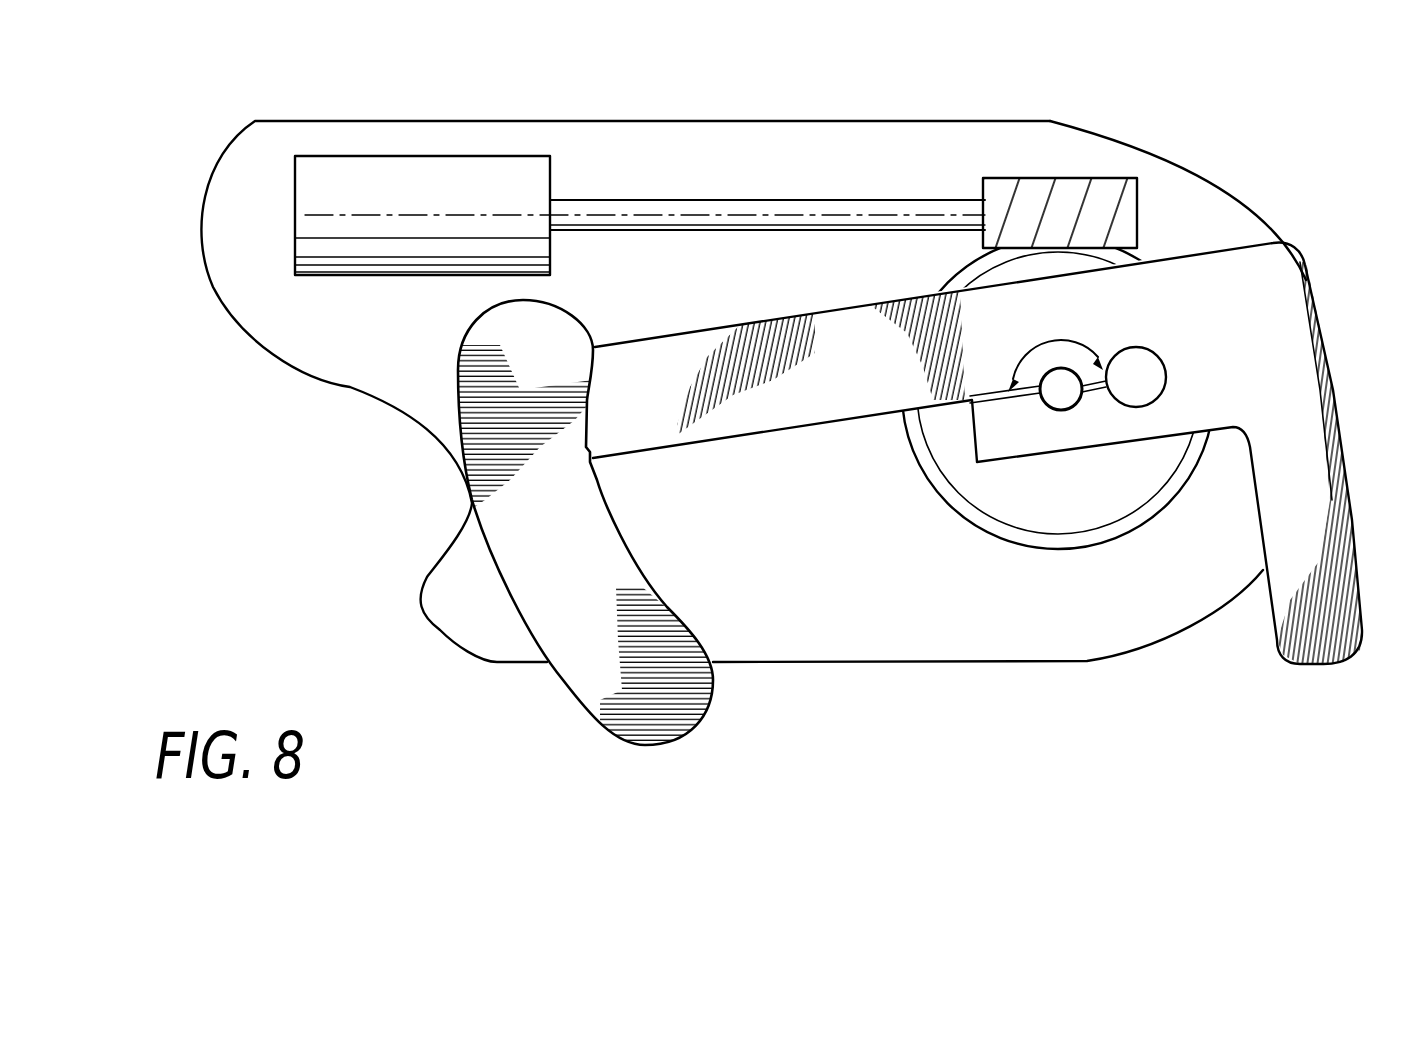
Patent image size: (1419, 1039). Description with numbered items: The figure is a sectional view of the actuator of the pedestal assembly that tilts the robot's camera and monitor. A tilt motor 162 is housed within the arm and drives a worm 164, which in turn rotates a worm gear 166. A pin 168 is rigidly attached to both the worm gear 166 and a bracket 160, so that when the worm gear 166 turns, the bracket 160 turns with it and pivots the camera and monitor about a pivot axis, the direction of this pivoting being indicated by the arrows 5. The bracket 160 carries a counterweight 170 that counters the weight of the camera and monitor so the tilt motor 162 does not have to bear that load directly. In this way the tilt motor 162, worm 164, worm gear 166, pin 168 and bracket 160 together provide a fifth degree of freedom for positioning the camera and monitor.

The bracket 160 is at (825, 390).
The tilt motor 162 is at (402, 177).
The worm 164 is at (1060, 215).
The worm gear 166 is at (1063, 500).
The pin 168 is at (1067, 395).
The counterweight 170 is at (590, 623).
The arrows 5 is at (1055, 347).